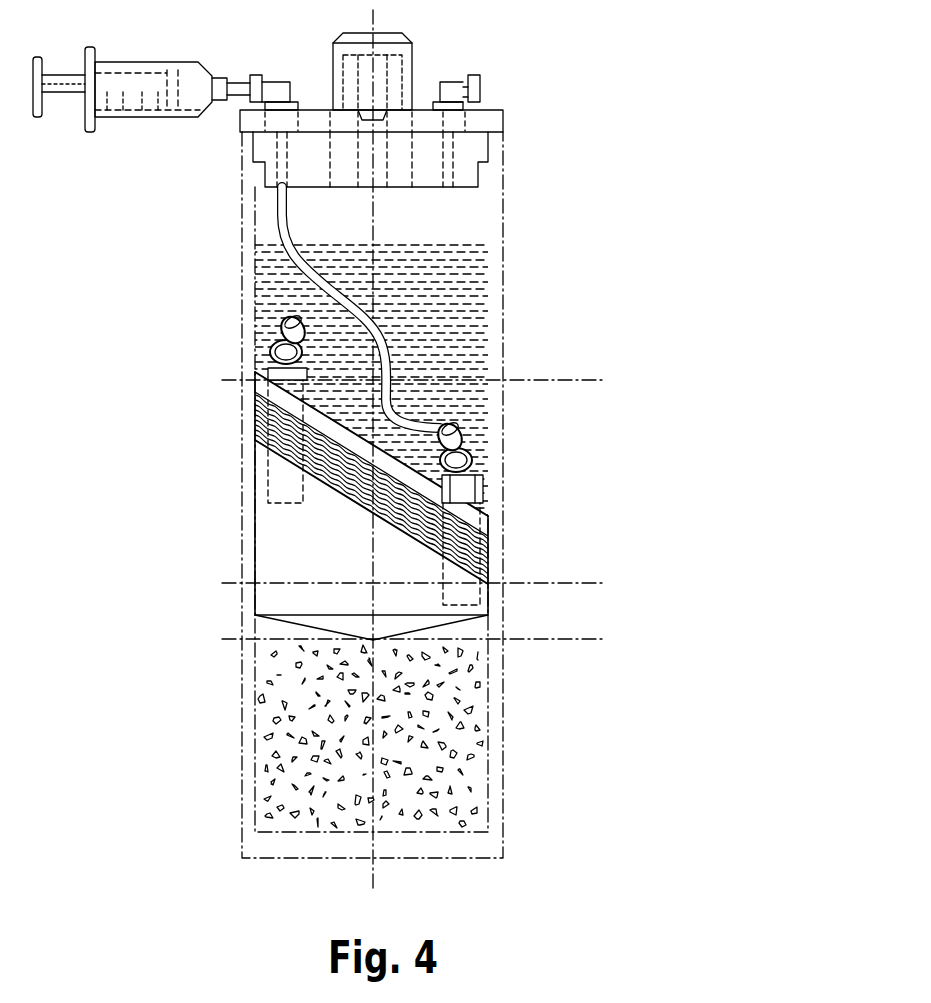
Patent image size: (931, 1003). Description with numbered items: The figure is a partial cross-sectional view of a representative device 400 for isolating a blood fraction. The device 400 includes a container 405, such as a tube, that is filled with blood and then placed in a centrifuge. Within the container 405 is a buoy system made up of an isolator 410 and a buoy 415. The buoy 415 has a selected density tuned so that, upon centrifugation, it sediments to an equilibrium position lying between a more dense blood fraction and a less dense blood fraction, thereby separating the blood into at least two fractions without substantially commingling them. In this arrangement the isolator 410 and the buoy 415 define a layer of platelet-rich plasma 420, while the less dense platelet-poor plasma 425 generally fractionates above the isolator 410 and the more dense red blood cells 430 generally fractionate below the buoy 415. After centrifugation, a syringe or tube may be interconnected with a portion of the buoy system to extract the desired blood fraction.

The device 400 is at (548, 137).
The container 405 is at (507, 296).
The isolator 410 is at (262, 385).
The buoy 415 is at (287, 594).
The platelet-rich plasma 420 is at (458, 492).
The platelet-poor plasma 425 is at (452, 357).
The red blood cells 430 is at (448, 765).